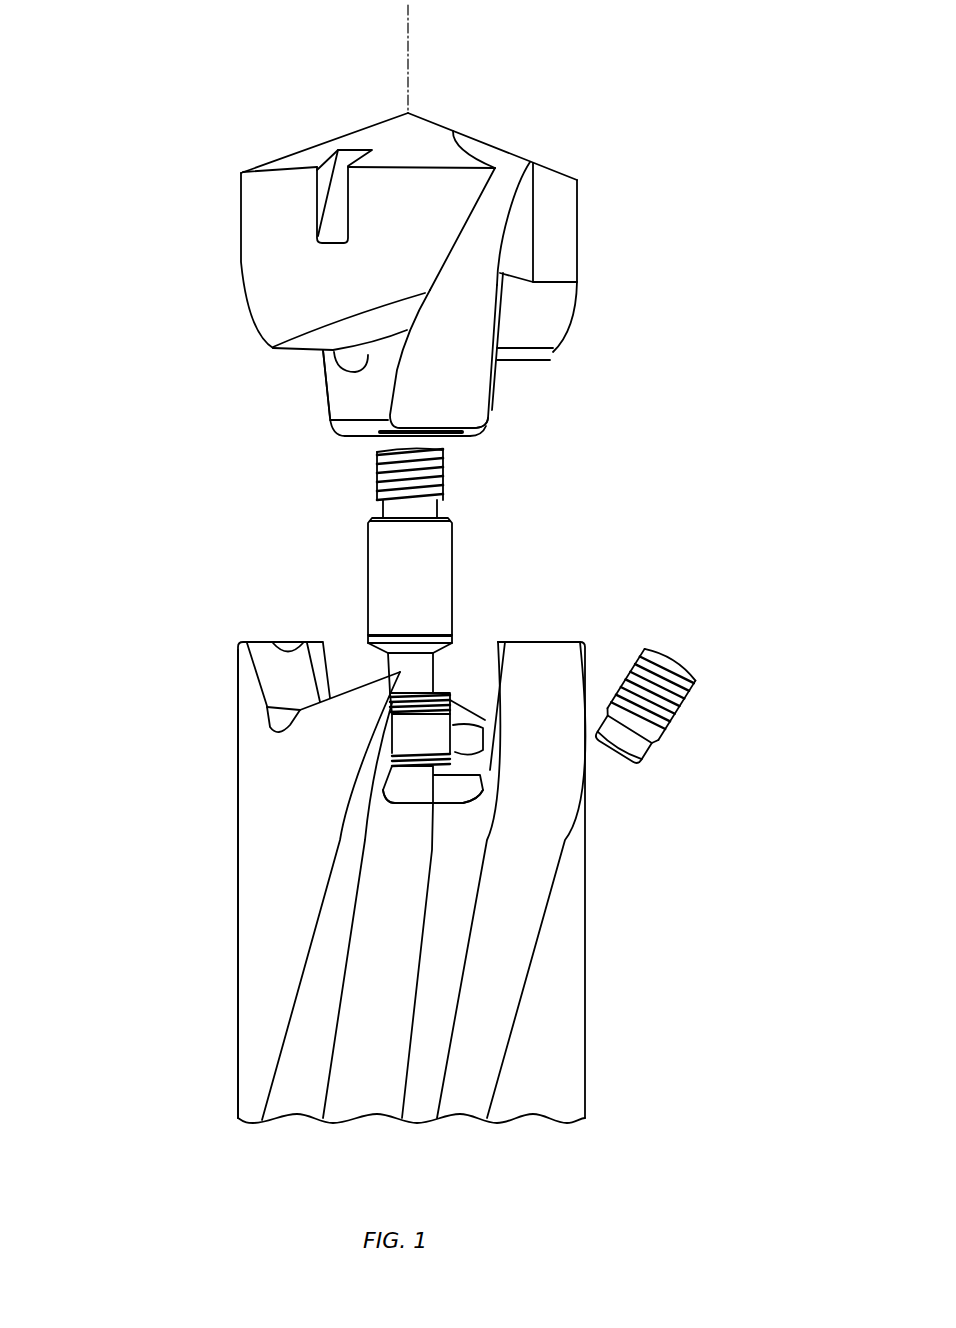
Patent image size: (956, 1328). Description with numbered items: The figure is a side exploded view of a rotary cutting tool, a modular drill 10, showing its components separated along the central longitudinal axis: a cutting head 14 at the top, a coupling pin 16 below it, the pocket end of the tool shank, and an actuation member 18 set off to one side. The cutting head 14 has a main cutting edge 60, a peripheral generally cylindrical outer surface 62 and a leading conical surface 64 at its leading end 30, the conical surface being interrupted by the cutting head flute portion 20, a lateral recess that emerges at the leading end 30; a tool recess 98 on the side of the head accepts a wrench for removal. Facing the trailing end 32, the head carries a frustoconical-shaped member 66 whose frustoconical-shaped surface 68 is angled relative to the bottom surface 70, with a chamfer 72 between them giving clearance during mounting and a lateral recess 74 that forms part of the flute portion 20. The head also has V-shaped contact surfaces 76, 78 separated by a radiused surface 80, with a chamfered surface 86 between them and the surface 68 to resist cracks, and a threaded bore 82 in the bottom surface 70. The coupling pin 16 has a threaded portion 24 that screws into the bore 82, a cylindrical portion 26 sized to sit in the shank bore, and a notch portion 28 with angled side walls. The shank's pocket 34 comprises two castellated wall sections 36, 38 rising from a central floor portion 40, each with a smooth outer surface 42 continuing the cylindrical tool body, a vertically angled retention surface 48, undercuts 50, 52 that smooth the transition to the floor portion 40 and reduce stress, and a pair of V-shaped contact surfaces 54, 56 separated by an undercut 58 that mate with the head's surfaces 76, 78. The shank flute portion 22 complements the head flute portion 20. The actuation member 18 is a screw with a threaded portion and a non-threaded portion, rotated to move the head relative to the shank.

The modular drill 10 is at (114, 81).
The cutting head 14 is at (367, 261).
The coupling pin 16 is at (424, 658).
The actuation member 18 is at (688, 687).
The cutting head flute portion 20 is at (455, 357).
The shank flute portion 22 is at (397, 847).
The threaded portion 24 is at (445, 473).
The cylindrical portion 26 is at (367, 558).
The notch portion 28 is at (380, 665).
The leading end 30 is at (498, 77).
The trailing end 32 is at (348, 443).
The pocket 34 is at (477, 610).
The castellated wall section 36 is at (205, 650).
The castellated wall section 38 is at (600, 650).
The central floor portion 40 is at (463, 780).
The smooth outer surface 42 is at (270, 820).
The vertically angled retention surface 48 is at (494, 668).
The undercut 50 is at (396, 795).
The undercut 52 is at (463, 793).
The V-shaped contact surface 54 is at (350, 683).
The V-shaped contact surface 56 is at (268, 663).
The undercut 58 is at (280, 723).
The main cutting edge 60 is at (486, 140).
The peripheral outer surface 62 is at (258, 203).
The leading conical surface 64 is at (382, 132).
The frustoconical-shaped member 66 is at (320, 404).
The frustoconical-shaped surface 68 is at (353, 382).
The bottom surface 70 is at (368, 438).
The chamfer 72 is at (477, 427).
The lateral recess 74 is at (458, 387).
The V-shaped contact surface 76 is at (548, 300).
The V-shaped contact surface 78 is at (323, 336).
The radiused surface 80 is at (547, 364).
The threaded bore 82 is at (440, 442).
The chamfered surface 86 is at (387, 348).
The tool recess 98 is at (338, 185).